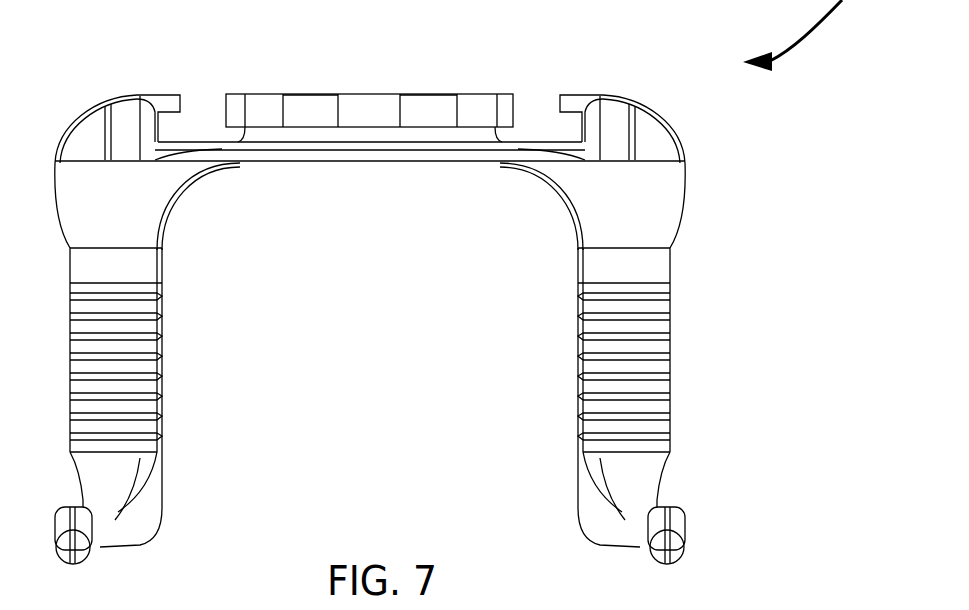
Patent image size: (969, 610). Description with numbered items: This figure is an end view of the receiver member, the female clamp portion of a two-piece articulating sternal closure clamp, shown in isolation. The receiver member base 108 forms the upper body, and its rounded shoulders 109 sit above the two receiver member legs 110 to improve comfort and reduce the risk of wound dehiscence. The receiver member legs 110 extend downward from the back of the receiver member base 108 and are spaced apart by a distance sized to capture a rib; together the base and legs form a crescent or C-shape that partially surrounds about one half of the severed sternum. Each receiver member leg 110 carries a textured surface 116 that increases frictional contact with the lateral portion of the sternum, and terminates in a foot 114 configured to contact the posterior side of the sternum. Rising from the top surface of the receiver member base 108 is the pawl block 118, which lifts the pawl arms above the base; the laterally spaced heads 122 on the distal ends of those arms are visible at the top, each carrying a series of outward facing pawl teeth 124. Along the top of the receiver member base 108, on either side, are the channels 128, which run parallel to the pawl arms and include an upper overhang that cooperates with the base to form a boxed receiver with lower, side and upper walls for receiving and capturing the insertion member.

The receiver member base 108 is at (460, 158).
The rounded shoulders 109 is at (662, 133).
The receiver member legs 110 is at (147, 220).
The feet 114 is at (112, 500).
The textured surface 116 is at (157, 317).
The pawl block 118 is at (360, 126).
The head 122 is at (300, 112).
The pawl teeth 124 is at (233, 112).
The channels 128 is at (165, 130).